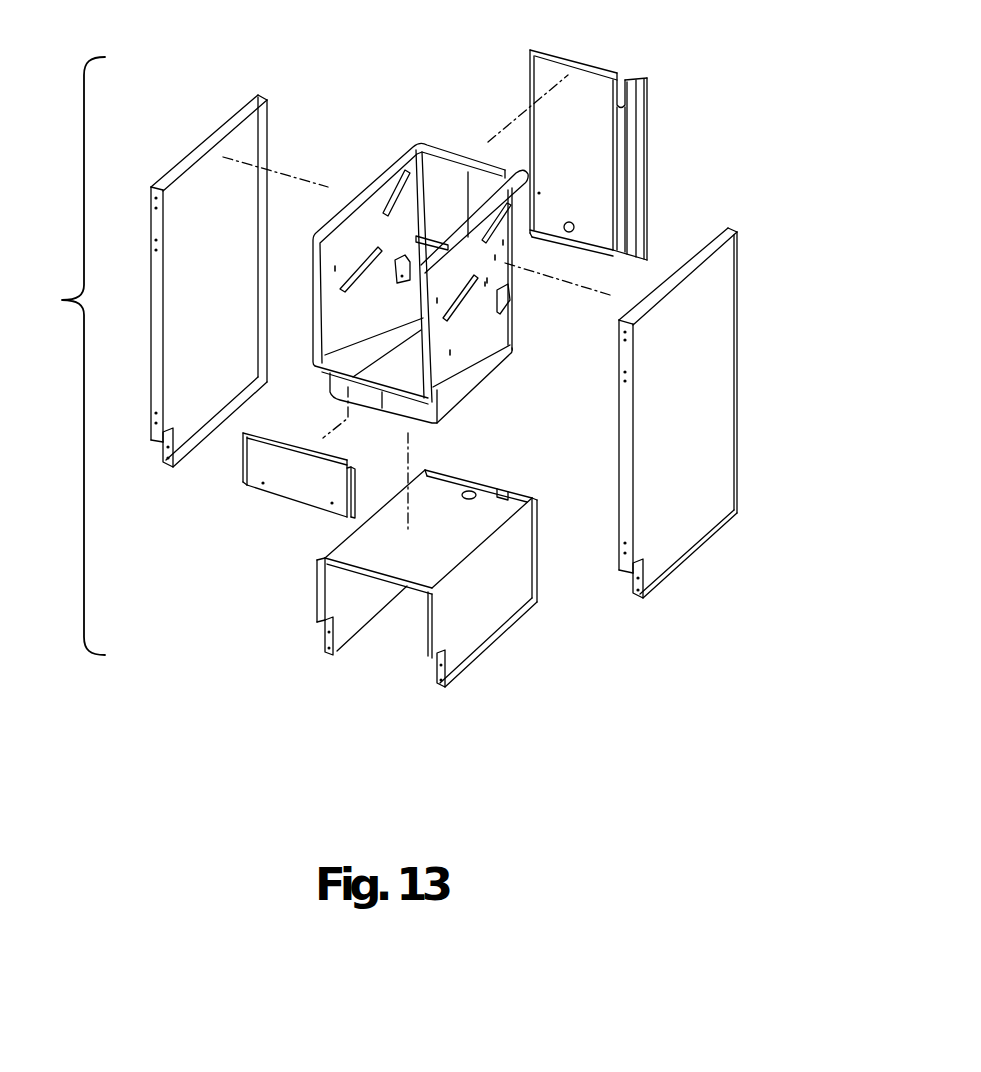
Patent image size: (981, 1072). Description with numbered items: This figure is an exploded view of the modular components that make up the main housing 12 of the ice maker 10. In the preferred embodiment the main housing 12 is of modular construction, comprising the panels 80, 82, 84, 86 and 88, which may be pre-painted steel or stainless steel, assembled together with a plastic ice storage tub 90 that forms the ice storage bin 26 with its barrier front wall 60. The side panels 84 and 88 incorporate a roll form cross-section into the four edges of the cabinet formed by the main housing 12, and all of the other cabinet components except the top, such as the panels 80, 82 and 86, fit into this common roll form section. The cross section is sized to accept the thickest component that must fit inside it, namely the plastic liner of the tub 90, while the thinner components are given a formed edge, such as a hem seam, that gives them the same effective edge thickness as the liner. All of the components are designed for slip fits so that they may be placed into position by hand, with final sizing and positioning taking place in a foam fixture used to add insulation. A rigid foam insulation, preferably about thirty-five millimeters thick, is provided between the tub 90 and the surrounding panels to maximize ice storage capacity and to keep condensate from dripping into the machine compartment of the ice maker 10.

The ice maker 10 is at (724, 192).
The main housing 12 is at (70, 356).
The ice storage bin 26 is at (343, 320).
The barrier front wall 60 is at (258, 463).
The panel 80 is at (342, 597).
The panel 82 is at (278, 490).
The side panel 84 is at (180, 217).
The panel 86 is at (580, 98).
The side panel 88 is at (718, 420).
The plastic ice storage tub 90 is at (382, 177).